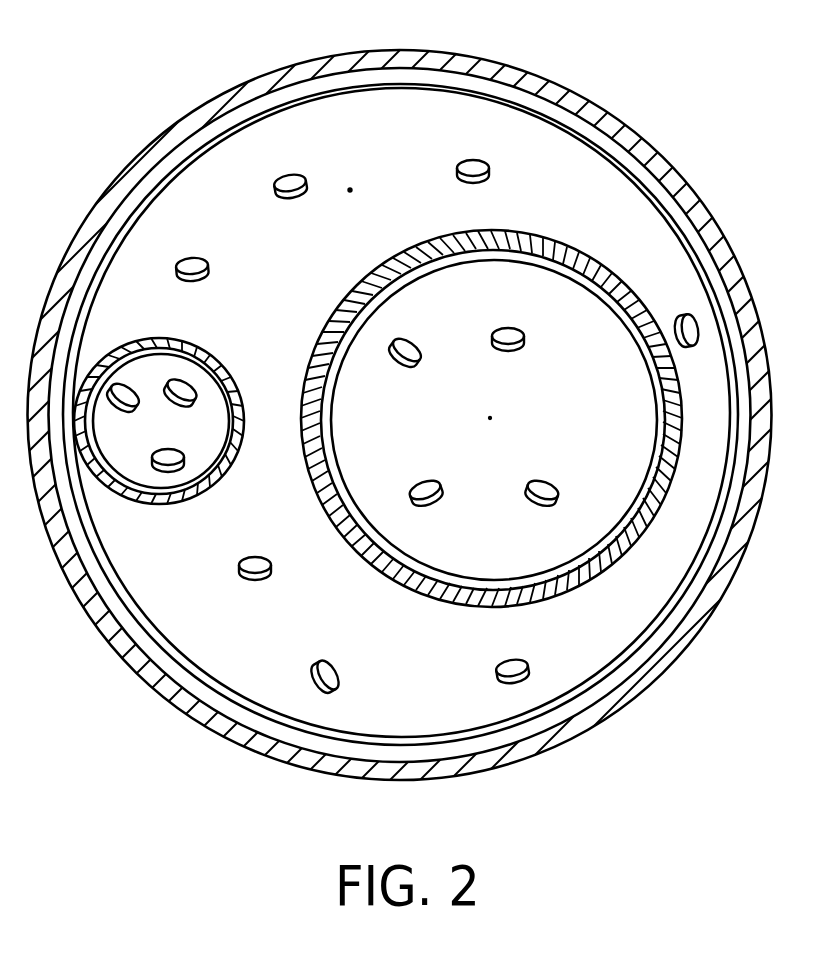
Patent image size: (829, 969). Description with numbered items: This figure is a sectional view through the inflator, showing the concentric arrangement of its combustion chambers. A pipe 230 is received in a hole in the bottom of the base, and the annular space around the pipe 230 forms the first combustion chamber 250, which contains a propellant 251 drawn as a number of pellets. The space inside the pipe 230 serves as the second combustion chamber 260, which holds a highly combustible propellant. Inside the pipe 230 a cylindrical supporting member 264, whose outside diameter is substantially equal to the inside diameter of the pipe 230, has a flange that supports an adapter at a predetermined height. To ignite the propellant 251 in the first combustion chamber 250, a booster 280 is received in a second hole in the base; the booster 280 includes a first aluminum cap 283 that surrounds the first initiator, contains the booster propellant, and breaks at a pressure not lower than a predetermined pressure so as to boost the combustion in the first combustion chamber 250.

The first combustion chamber 250 is at (350, 125).
The propellant 251 is at (310, 680).
The pipe 230 is at (573, 253).
The second combustion chamber 260 is at (553, 535).
The cylindrical supporting member 264 is at (622, 503).
The booster 280 is at (113, 507).
The first aluminum cap 283 is at (163, 343).